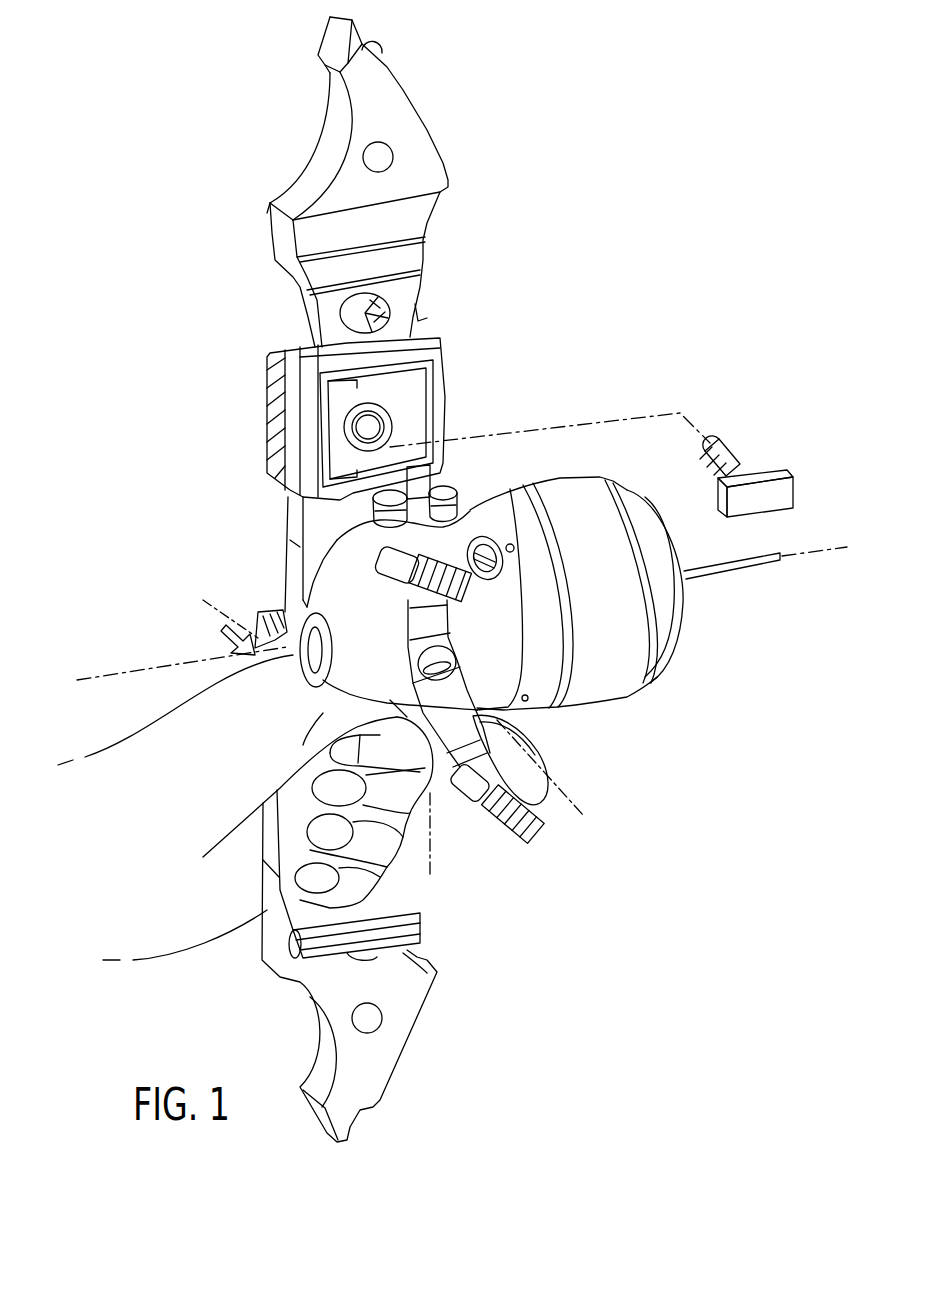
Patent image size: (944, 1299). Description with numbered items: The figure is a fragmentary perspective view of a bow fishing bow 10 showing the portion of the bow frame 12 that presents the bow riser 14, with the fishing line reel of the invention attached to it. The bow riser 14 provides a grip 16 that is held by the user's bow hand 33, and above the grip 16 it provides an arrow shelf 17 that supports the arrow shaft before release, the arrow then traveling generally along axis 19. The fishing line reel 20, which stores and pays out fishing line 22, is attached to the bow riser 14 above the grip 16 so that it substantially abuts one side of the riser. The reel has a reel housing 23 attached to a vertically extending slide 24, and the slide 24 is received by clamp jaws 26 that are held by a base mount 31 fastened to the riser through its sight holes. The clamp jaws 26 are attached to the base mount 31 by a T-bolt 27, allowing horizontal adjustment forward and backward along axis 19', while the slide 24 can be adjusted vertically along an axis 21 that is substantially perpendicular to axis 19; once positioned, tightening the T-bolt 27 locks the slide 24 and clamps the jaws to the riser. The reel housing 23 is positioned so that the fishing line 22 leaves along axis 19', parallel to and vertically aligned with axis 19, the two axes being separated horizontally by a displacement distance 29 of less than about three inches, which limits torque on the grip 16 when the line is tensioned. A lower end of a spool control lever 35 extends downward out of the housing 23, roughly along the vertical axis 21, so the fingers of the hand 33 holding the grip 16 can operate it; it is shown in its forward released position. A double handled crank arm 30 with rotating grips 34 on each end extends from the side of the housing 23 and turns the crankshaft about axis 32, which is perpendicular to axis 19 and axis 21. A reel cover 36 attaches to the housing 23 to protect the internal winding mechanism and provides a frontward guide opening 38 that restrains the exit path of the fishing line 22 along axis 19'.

The bow fishing bow 10 is at (597, 250).
The bow frame 12 is at (403, 110).
The bow riser 14 is at (320, 510).
The grip 16 is at (277, 838).
The arrow shelf 17 is at (260, 630).
The axis 19 is at (182, 682).
The axis of the fishing line 19' is at (513, 557).
The fishing line reel 20 is at (693, 693).
The vertical axis 21 is at (437, 308).
The fishing line 22 is at (717, 560).
The reel housing 23 is at (343, 580).
The slide 24 is at (430, 488).
The clamp jaws 26 is at (378, 333).
The T-bolt 27 is at (767, 470).
The displacement distance 29 is at (240, 645).
The crank arm 30 is at (440, 703).
The base mount 31 is at (267, 373).
The axis 32 is at (580, 790).
The hand 33 is at (198, 940).
The rotating grips 34 is at (470, 595).
The spool control lever 35 is at (547, 780).
The reel cover 36 is at (620, 677).
The guide opening 38 is at (712, 610).